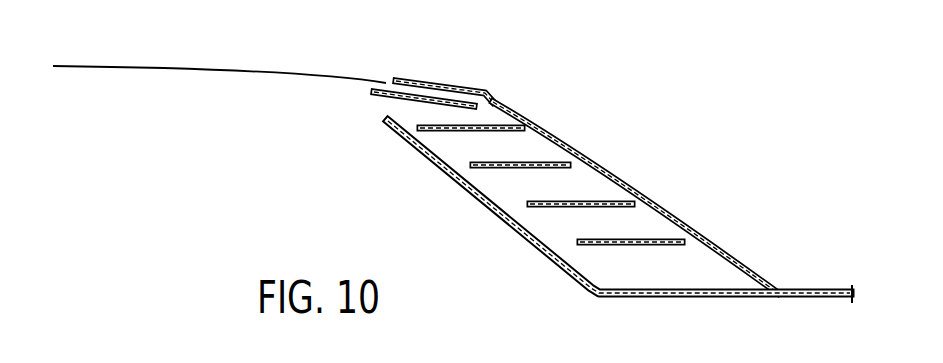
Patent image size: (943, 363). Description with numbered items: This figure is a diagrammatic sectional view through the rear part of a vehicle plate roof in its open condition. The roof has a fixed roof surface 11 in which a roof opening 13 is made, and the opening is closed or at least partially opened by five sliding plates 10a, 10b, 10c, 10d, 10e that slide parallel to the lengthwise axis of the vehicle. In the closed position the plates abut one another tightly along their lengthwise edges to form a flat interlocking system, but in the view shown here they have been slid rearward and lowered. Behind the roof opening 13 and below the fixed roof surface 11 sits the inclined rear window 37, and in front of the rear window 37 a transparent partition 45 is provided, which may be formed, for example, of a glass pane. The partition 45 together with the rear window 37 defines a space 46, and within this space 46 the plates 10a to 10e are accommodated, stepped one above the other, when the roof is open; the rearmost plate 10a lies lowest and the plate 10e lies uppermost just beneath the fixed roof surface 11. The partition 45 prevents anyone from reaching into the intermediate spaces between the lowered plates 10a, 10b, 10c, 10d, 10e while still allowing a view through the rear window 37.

The roof opening 13 is at (192, 99).
The fixed roof surface 11 is at (437, 81).
The rear window 37 is at (597, 162).
The sliding plate 10e is at (386, 91).
The sliding plate 10d is at (497, 126).
The sliding plate 10c is at (541, 163).
The sliding plate 10b is at (548, 208).
The rearmost sliding plate 10a is at (595, 246).
The transparent partition 45 is at (462, 181).
The space 46 is at (558, 184).